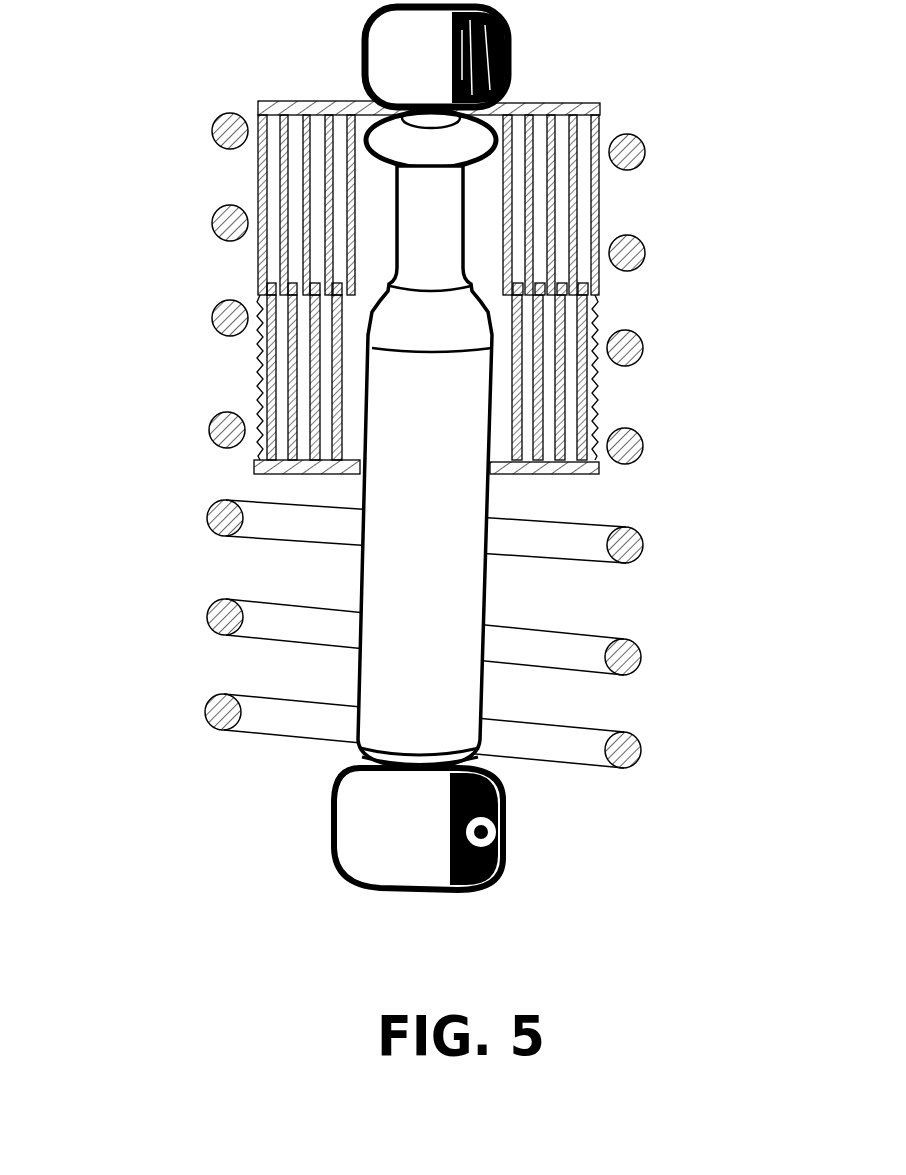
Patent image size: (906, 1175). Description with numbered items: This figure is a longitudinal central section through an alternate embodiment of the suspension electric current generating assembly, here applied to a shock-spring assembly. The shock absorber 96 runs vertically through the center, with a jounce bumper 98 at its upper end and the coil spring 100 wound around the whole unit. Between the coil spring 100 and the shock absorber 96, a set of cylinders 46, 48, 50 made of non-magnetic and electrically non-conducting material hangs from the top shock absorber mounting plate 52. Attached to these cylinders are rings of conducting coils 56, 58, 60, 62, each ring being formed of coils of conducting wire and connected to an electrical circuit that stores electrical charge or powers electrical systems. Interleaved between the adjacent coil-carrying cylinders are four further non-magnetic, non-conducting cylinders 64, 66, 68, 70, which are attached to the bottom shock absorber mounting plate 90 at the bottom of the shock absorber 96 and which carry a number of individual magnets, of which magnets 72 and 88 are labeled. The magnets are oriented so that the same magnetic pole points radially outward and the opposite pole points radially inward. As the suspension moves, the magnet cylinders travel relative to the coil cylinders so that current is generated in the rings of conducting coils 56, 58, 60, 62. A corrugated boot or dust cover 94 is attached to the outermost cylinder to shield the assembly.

The shock absorber to conducting coils attachment cylinder 46 is at (288, 208).
The shock absorber to conducting coils attachment cylinder 48 is at (273, 181).
The shock absorber to conducting coils attachment cylinder 50 is at (251, 150).
The top shock absorber mounting plate 52 is at (582, 103).
The ring of conducting coils 56 is at (268, 300).
The ring of conducting coils 58 is at (268, 288).
The ring of conducting coils 60 is at (268, 272).
The ring of conducting coils 62 is at (256, 258).
The shock absorber to magnets attachment cylinder 64 is at (597, 368).
The shock absorber to magnets attachment cylinder 66 is at (575, 393).
The shock absorber to magnets attachment cylinder 68 is at (554, 422).
The shock absorber to magnets attachment cylinder 70 is at (532, 445).
The magnet 72 is at (268, 293).
The magnet 88 is at (604, 280).
The bottom shock absorber mounting plate 90 is at (572, 478).
The dust cover 94 is at (254, 385).
The shock absorber 96 is at (442, 448).
The jounce (spring) bumper 98 is at (512, 103).
The coil spring 100 is at (652, 148).